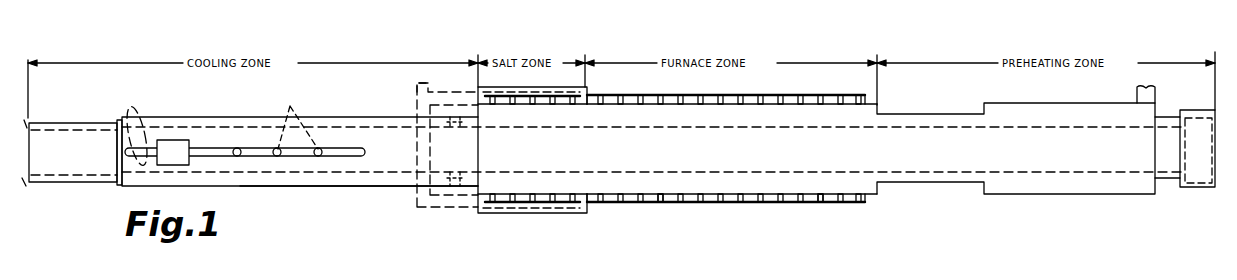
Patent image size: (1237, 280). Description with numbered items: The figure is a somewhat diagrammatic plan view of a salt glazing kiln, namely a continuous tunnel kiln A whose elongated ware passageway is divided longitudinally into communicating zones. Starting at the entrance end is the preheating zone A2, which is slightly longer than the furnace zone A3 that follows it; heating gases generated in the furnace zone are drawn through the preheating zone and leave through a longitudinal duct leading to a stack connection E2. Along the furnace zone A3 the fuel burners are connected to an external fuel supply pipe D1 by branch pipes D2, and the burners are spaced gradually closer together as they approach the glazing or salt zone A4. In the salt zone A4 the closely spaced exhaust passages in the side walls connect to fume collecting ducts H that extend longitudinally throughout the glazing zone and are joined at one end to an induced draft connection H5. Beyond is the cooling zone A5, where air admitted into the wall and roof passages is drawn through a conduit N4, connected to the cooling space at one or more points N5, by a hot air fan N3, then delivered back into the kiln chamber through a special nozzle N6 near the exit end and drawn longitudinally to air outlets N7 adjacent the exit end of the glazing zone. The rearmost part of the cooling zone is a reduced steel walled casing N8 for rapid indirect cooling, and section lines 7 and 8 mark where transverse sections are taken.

The steel walled casing N8 is at (70, 122).
The special nozzle N6 is at (141, 131).
The hot air fan N3 is at (170, 140).
The conduit N4 is at (210, 147).
The connection points N5 is at (298, 120).
The cooling zone A5 is at (287, 187).
The exhaust or fume collecting ducts H is at (442, 93).
The induced draft connection H5 is at (417, 88).
The air outlets N7 is at (452, 137).
The glazing or salt zone A4 is at (523, 213).
The furnace zone A3 is at (757, 198).
The branch pipes D2 is at (666, 221).
The external fuel supply pipe D1 is at (828, 203).
The preheating zone A2 is at (1033, 195).
The stack connection E2 is at (1157, 94).
The continuous tunnel kiln A is at (1210, 188).
The section line 8 is at (358, 92).
The section line 7 is at (1105, 87).